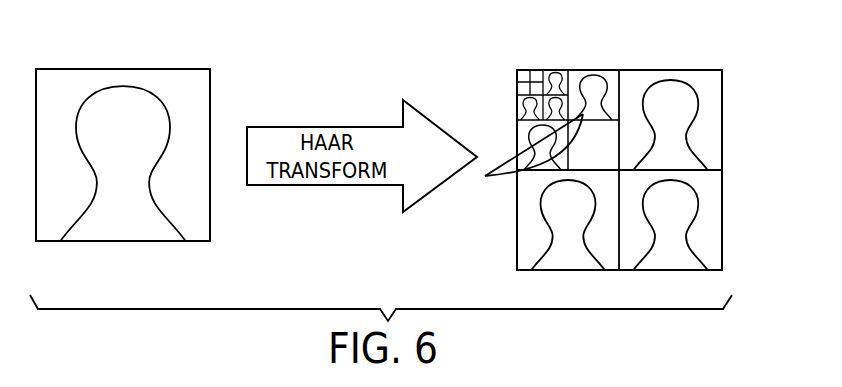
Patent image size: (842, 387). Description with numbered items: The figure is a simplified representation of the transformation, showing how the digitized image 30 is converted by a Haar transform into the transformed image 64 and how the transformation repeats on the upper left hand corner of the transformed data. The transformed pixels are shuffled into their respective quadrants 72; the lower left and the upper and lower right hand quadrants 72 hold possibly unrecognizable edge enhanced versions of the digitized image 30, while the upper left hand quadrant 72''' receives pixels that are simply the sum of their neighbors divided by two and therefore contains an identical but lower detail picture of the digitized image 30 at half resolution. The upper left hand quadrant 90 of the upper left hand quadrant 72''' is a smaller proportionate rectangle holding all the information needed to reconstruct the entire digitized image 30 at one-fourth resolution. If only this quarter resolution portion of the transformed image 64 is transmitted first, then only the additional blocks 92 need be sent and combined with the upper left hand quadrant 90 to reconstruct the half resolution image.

The digitized image 30 is at (210, 90).
The transformed image 64 is at (725, 87).
The quadrants 72 is at (619, 160).
The upper left hand quadrant 72''' is at (532, 85).
The upper left hand quadrant of the upper left hand quadrant 90 is at (517, 100).
The additional blocks 92 is at (520, 158).